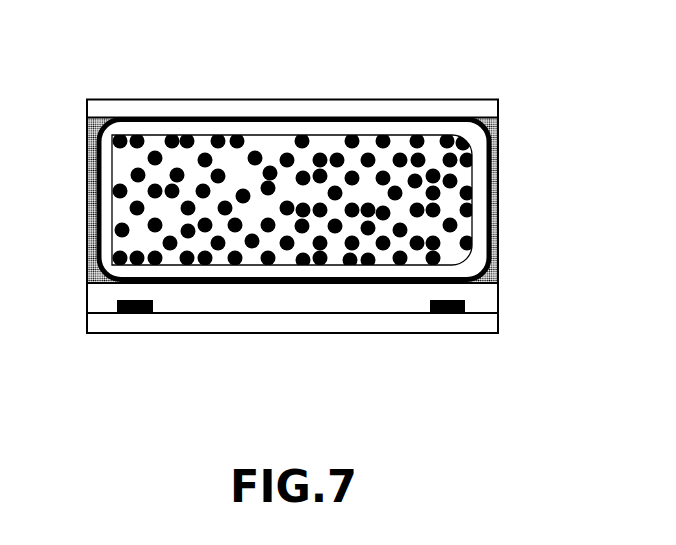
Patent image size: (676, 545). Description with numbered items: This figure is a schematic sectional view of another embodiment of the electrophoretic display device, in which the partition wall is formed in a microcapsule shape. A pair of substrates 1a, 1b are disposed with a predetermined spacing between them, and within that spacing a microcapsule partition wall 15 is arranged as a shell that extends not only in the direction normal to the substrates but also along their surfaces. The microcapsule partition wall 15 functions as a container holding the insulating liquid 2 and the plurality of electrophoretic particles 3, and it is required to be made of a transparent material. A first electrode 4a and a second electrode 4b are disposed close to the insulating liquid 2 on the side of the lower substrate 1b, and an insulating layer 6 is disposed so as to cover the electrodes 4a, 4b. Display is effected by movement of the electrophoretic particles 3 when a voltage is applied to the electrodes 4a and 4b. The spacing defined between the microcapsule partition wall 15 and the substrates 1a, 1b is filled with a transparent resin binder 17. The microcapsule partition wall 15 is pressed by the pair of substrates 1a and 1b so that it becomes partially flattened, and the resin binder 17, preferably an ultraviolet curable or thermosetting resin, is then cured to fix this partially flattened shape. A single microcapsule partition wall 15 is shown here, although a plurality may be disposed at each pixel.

The substrate 1a is at (170, 110).
The substrate 1b is at (303, 333).
The insulating liquid 2 is at (275, 150).
The electrophoretic particles 3 is at (392, 140).
The first electrode 4a is at (129, 313).
The second electrode 4b is at (452, 313).
The insulating layer 6 is at (234, 302).
The microcapsule partition wall 15 is at (87, 197).
The resin binder 17 is at (498, 188).